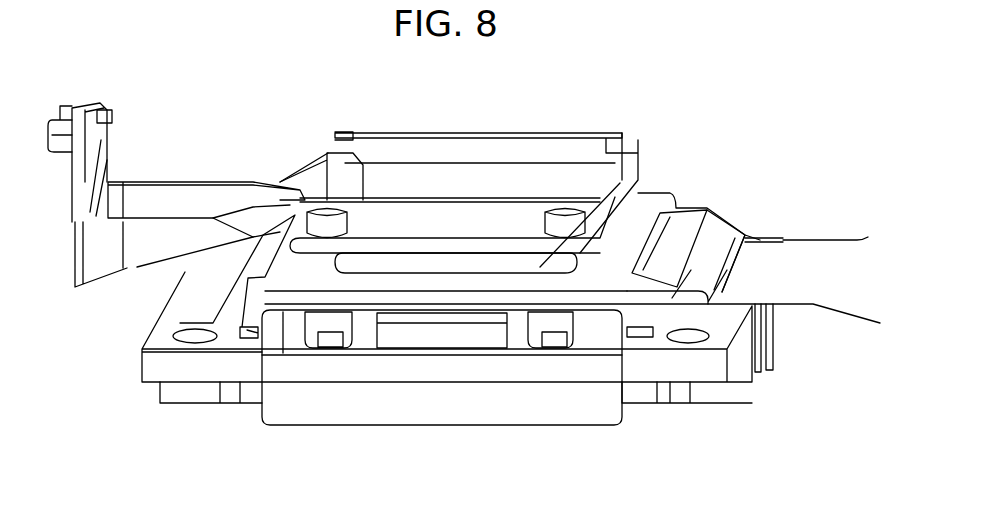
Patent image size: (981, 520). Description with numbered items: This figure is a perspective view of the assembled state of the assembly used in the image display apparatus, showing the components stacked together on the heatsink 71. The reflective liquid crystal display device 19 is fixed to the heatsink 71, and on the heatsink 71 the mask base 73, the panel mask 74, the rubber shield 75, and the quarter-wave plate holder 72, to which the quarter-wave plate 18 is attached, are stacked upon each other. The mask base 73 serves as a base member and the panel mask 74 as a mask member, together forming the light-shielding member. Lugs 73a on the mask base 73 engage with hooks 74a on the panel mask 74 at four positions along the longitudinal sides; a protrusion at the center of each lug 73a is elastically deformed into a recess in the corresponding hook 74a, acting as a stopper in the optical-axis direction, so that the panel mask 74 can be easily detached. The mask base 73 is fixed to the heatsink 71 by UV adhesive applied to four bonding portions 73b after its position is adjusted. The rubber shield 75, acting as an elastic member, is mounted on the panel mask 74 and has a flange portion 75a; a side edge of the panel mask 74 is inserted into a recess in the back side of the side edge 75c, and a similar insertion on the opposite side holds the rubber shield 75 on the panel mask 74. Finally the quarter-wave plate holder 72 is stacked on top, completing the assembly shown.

The quarter-wave plate 18 is at (465, 185).
The reflective liquid crystal display device 19 is at (783, 262).
The heatsink 71 is at (227, 382).
The quarter-wave plate holder 72 is at (228, 200).
The mask base 73 is at (445, 338).
The lugs 73a is at (332, 340).
The bonding portions 73b is at (247, 330).
The panel mask 74 is at (585, 350).
The hooks 74a is at (537, 342).
The rubber shield 75 is at (638, 225).
The flange portion 75a is at (400, 262).
The side edge 75c is at (720, 235).